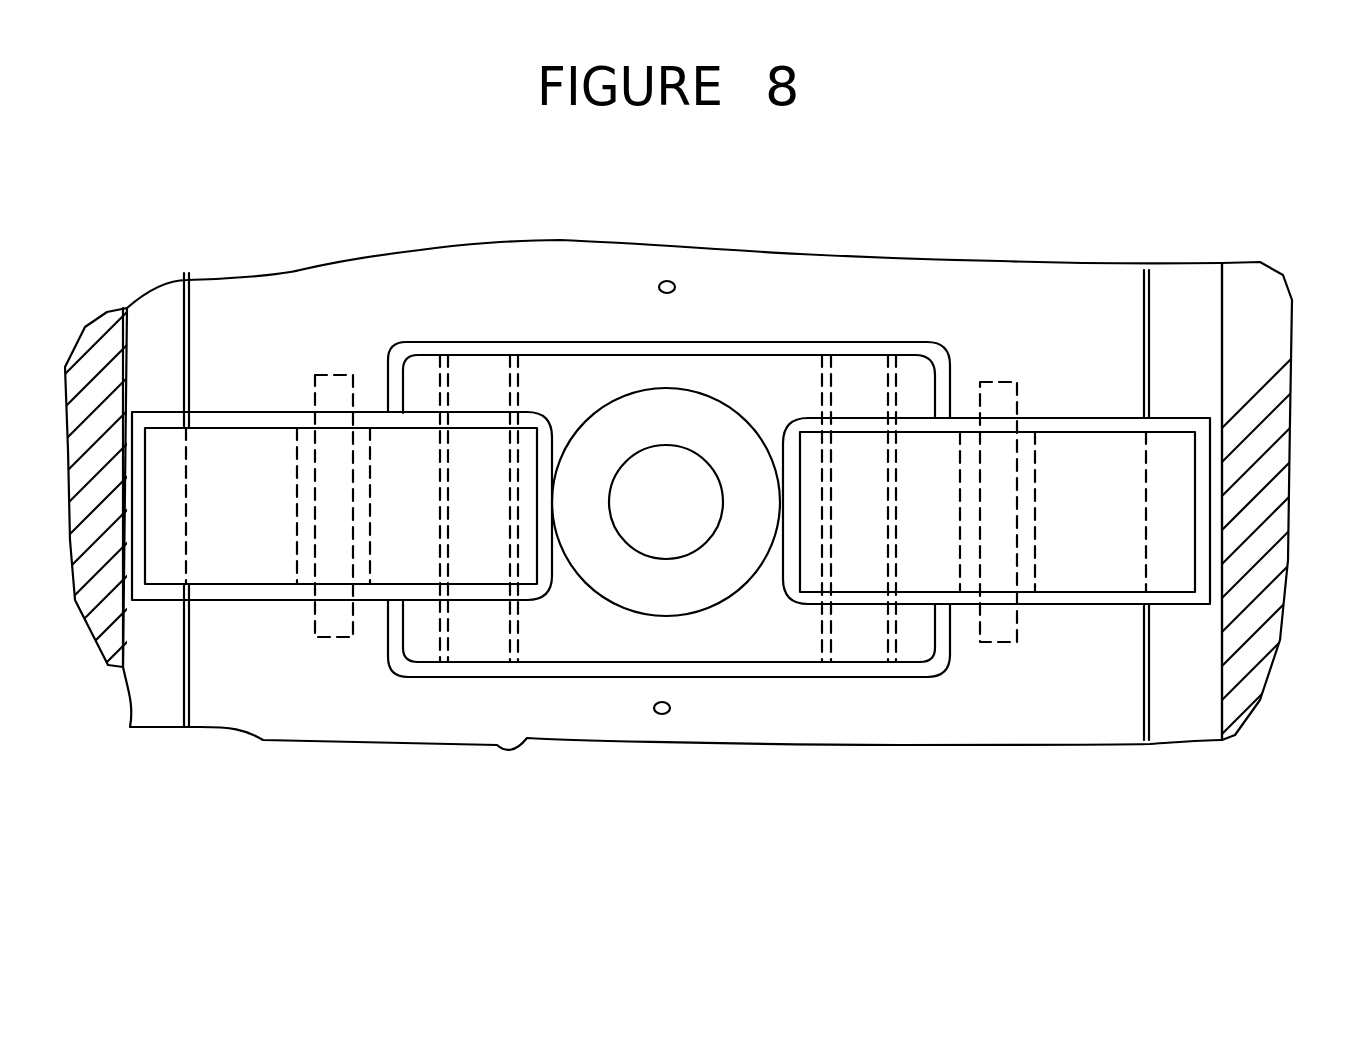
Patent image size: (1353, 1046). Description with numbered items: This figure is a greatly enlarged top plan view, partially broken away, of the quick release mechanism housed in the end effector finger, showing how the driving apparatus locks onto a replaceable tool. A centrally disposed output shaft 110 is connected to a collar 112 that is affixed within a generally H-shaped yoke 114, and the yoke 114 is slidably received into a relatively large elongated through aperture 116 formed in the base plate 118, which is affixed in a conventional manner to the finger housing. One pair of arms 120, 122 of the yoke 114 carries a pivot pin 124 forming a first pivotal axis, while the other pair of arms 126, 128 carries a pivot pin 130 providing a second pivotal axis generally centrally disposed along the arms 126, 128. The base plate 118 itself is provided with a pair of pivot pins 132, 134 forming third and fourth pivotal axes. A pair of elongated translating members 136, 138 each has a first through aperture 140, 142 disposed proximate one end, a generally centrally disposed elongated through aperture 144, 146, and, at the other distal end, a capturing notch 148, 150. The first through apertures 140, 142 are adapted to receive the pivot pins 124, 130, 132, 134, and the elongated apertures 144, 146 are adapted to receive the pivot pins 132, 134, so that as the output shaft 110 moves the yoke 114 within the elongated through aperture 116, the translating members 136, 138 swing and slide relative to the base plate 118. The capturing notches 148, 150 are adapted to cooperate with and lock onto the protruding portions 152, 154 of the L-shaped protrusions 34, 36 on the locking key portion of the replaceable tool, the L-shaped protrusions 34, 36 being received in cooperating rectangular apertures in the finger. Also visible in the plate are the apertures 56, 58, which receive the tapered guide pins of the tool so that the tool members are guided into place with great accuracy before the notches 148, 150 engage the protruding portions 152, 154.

The L-shaped protrusion 34 is at (1275, 603).
The L-shaped protrusion 36 is at (90, 348).
The aperture 56 is at (653, 715).
The aperture 58 is at (675, 283).
The output shaft 110 is at (650, 478).
The collar 112 is at (695, 422).
The yoke 114 is at (643, 372).
The elongated through aperture 116 is at (928, 343).
The base plate 118 is at (1120, 290).
The arm 120 is at (923, 373).
The arm 122 is at (805, 637).
The pivot pin 124 is at (852, 648).
The arm 126 is at (420, 380).
The arm 128 is at (415, 642).
The pivot pin 130 is at (475, 642).
The pivot pin 132 is at (332, 393).
The pivot pin 134 is at (1008, 383).
The elongated translating member 136 is at (242, 448).
The elongated translating member 138 is at (1120, 440).
The first through aperture 140 is at (448, 623).
The first through aperture 142 is at (902, 668).
The elongated through aperture 144 is at (303, 540).
The elongated through aperture 146 is at (1025, 470).
The capturing notch 148 is at (165, 558).
The capturing notch 150 is at (1170, 557).
The protruding portion 152 is at (157, 717).
The protruding portion 154 is at (1160, 722).